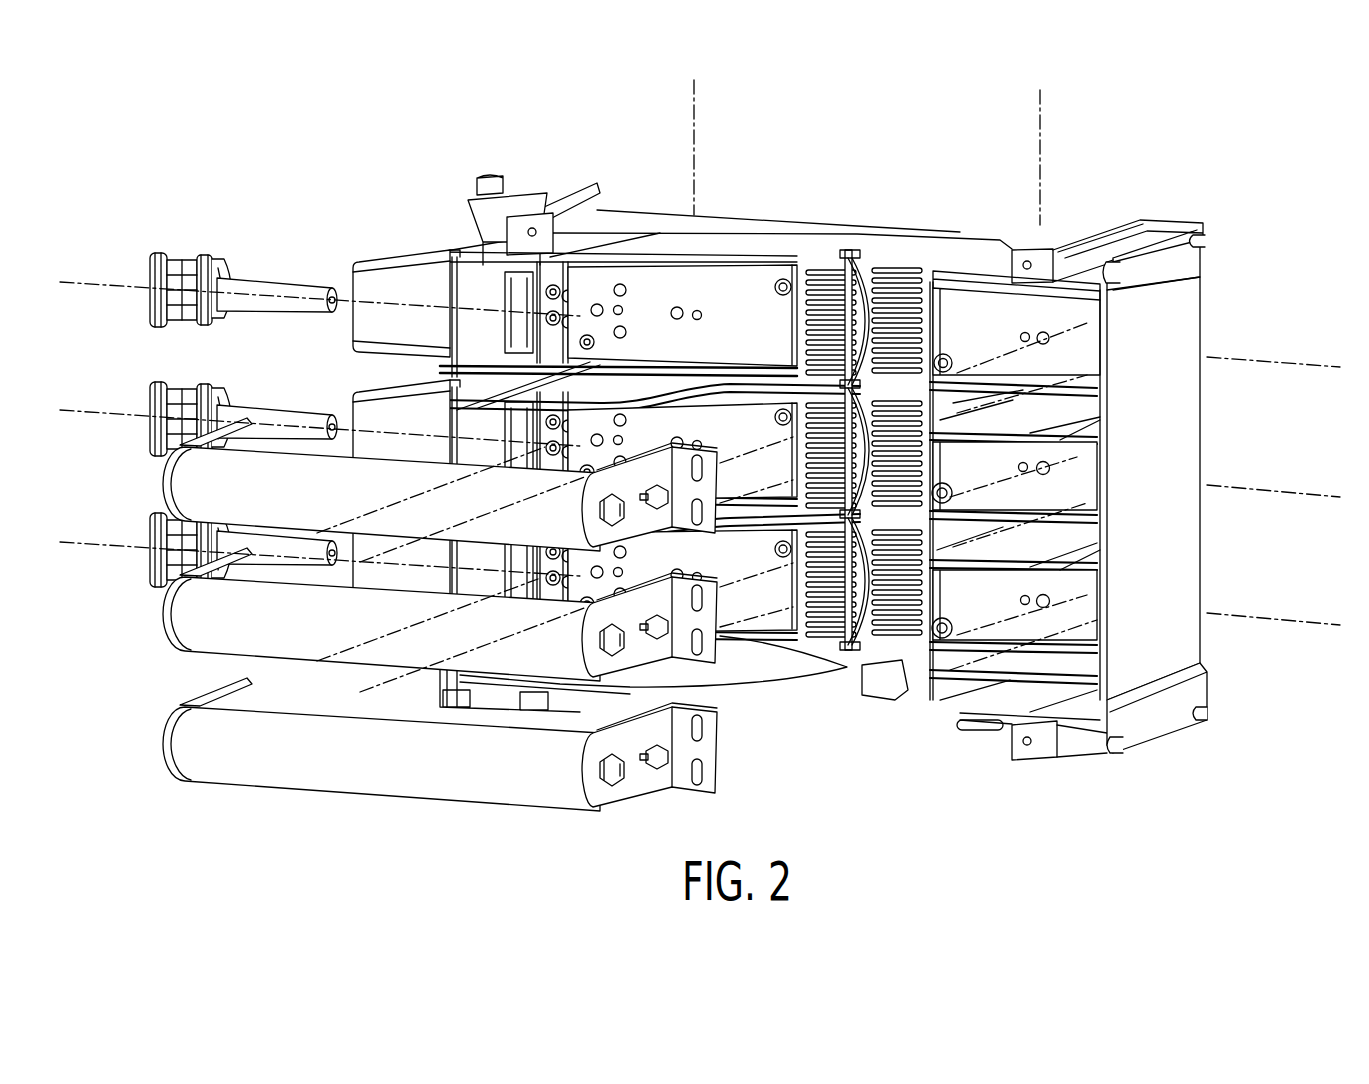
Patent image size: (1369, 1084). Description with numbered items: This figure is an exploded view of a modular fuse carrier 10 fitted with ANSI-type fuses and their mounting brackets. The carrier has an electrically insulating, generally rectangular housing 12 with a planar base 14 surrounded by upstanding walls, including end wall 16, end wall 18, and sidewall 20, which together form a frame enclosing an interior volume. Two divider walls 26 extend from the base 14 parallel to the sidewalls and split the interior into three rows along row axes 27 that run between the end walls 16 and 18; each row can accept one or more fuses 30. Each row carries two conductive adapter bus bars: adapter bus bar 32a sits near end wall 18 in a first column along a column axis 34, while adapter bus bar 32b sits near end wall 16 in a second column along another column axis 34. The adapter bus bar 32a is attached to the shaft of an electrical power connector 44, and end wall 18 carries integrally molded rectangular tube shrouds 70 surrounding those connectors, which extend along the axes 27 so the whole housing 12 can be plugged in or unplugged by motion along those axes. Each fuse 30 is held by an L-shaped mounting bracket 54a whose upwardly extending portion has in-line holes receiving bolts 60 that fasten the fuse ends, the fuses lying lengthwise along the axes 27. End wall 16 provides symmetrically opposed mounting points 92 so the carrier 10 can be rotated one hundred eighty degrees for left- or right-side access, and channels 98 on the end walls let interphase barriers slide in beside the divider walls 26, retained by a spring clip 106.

The modular fuse carrier 10 is at (663, 128).
The housing 12 is at (1094, 196).
The base 14 is at (793, 258).
The end wall 16 is at (1170, 397).
The end wall 18 is at (466, 290).
The sidewall 20 is at (627, 222).
The divider walls 26 is at (1073, 430).
The row axes 27 is at (123, 543).
The fuses 30 is at (327, 509).
The adapter bus bar 32a is at (763, 332).
The adapter bus bar 32b is at (991, 342).
The column axis 34 is at (695, 146).
The electrical power connector 44 is at (267, 407).
The mounting bracket 54a is at (165, 497).
The bolts 60 is at (618, 777).
The rectangular tube shrouds 70 is at (350, 410).
The mounting points 92 is at (1205, 243).
The channels 98 is at (1107, 573).
The spring clip 106 is at (841, 250).